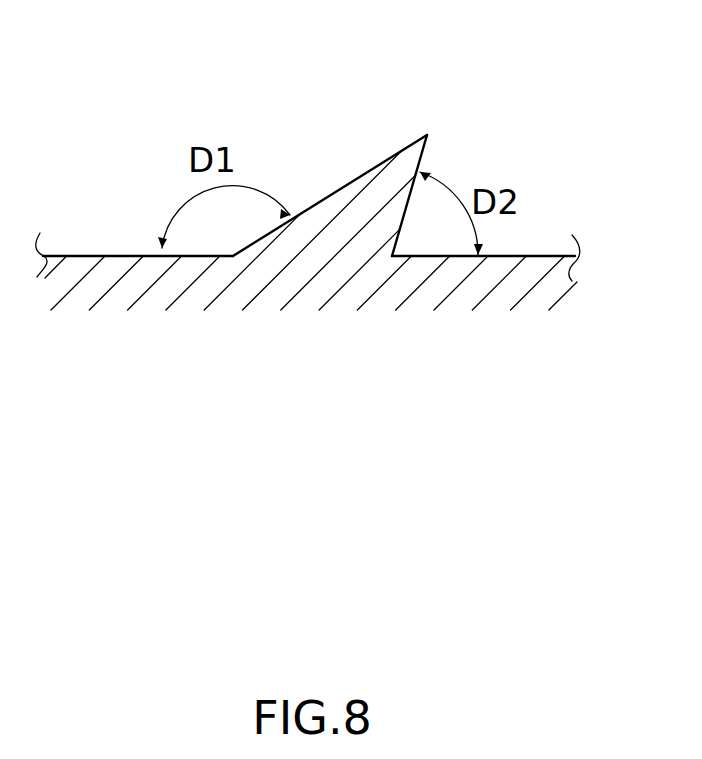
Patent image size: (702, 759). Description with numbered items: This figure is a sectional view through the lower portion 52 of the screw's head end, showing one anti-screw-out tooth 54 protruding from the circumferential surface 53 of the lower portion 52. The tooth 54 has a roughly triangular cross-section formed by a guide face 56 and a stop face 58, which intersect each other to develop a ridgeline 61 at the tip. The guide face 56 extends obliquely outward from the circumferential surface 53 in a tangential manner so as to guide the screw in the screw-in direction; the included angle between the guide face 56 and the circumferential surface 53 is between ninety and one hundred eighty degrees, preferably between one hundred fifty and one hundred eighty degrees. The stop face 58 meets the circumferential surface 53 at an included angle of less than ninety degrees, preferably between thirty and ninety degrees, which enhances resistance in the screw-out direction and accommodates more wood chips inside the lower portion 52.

The lower portion 52 is at (90, 263).
The circumferential surface 53 is at (562, 250).
The anti-screw-out tooth 54 is at (385, 158).
The guide face 56 is at (345, 185).
The stop face 58 is at (423, 156).
The ridgeline 61 is at (427, 135).